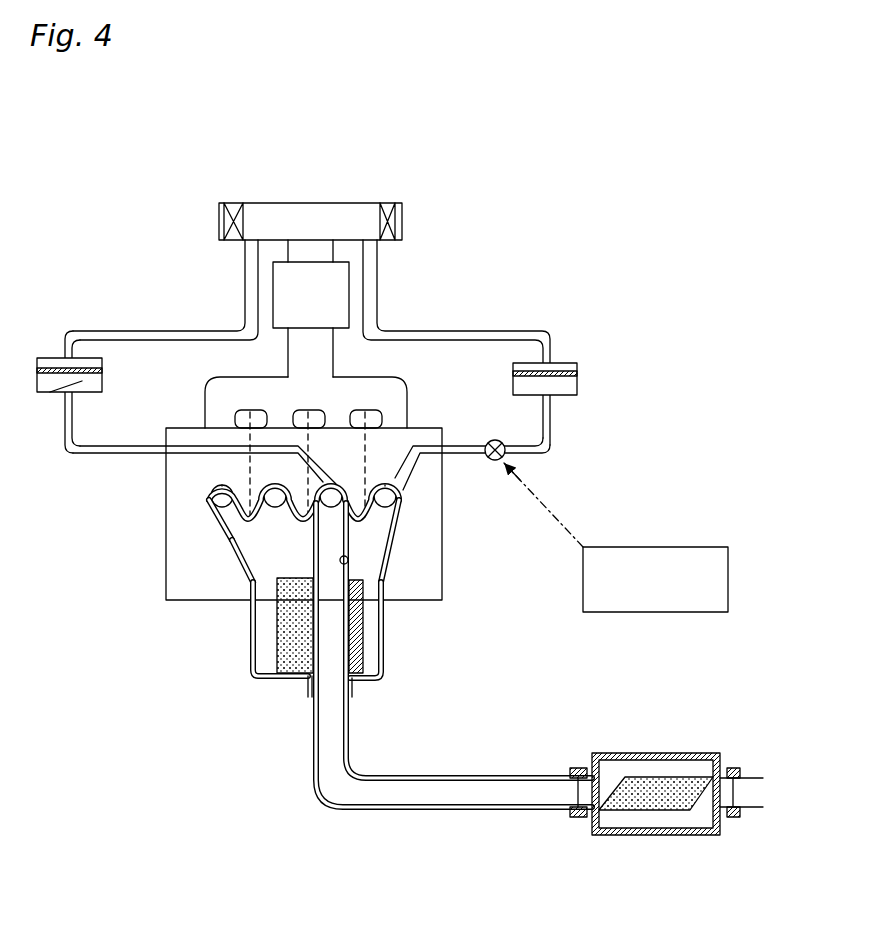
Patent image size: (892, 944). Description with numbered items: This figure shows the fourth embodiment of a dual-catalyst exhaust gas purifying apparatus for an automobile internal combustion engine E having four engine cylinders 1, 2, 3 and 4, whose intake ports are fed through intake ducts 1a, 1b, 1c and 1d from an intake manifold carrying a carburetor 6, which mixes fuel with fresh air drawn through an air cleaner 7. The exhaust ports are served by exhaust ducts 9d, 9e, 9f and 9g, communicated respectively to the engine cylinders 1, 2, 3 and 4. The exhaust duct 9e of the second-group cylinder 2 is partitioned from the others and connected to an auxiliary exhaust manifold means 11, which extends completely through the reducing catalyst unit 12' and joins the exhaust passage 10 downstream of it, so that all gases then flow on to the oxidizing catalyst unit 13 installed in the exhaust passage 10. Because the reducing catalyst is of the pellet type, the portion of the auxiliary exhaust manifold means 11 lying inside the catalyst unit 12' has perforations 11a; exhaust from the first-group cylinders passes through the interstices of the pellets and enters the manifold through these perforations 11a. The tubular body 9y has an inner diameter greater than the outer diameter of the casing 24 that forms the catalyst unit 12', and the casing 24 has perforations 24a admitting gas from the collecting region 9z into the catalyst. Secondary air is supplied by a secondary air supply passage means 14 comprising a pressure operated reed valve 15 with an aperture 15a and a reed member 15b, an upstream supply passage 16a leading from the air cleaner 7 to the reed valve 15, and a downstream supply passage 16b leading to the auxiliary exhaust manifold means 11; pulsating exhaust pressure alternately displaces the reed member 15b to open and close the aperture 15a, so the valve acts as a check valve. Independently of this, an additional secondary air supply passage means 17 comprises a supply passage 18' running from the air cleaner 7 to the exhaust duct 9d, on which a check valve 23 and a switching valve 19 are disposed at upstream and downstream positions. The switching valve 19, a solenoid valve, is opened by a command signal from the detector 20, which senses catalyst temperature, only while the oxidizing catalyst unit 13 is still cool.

The engine cylinder 1 is at (436, 485).
The intake duct 1a is at (388, 420).
The intake duct 1b is at (335, 420).
The intake duct 1c is at (278, 420).
The intake duct 1d is at (223, 413).
The engine cylinder 2 is at (355, 482).
The engine cylinder 3 is at (302, 482).
The engine cylinder 4 is at (190, 485).
The carburetor 6 is at (313, 275).
The air cleaner 7 is at (271, 203).
The exhaust duct 9d is at (397, 492).
The exhaust duct 9e is at (363, 487).
The exhaust duct 9f is at (230, 468).
The exhaust duct 9g is at (212, 508).
The tubular body 9y is at (248, 642).
The collecting region 9z is at (262, 552).
The exhaust passage 10 is at (500, 777).
The auxiliary exhaust manifold means 11 is at (350, 557).
The perforations 11a is at (350, 660).
The reducing catalyst unit 12' is at (305, 739).
The oxidizing catalyst unit 13 is at (655, 752).
The secondary air supply passage means 14 is at (86, 460).
The pressure operated valve 15 is at (44, 352).
The aperture 15a is at (72, 370).
The reed member 15b is at (60, 370).
The upstream supply passage 16a is at (163, 331).
The downstream supply passage 16b is at (128, 453).
The additional secondary air supply passage means 17 is at (577, 326).
The supply passage 18' is at (535, 456).
The switching valve 19 is at (497, 462).
The detector 20 is at (650, 612).
The check valve 23 is at (528, 390).
The casing 24 is at (355, 657).
The perforations 24a is at (275, 650).
The internal combustion engine E is at (155, 577).